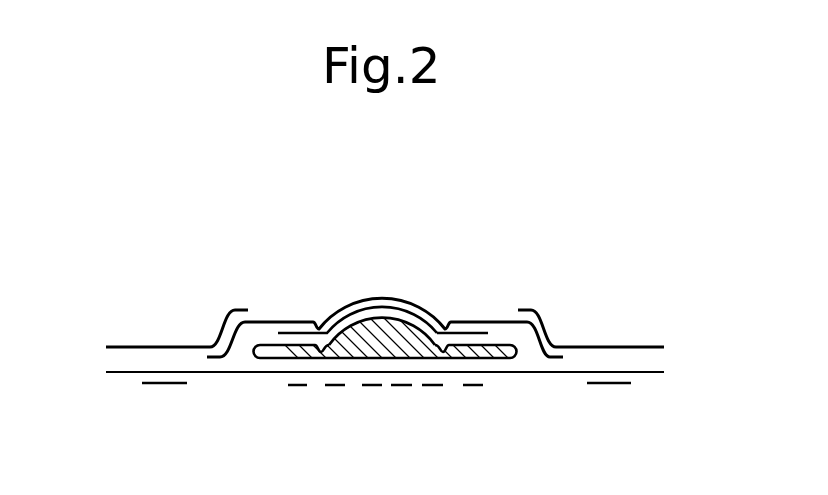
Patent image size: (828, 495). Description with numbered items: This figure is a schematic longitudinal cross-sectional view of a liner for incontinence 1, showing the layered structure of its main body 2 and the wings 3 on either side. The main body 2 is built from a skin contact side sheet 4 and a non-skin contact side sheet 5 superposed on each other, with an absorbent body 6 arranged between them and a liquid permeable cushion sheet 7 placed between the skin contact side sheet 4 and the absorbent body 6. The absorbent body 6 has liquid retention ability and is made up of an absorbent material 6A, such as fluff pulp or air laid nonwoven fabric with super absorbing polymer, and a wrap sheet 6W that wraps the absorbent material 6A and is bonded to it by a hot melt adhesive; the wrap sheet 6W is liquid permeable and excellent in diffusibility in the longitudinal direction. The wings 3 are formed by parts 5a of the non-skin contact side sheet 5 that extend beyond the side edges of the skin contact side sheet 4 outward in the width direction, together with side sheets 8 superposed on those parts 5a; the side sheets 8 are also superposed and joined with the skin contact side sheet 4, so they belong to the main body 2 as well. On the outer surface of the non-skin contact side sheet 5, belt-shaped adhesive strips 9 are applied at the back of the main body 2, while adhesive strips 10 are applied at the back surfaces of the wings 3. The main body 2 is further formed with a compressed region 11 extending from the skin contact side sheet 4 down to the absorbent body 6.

The liner for incontinence 1 is at (614, 226).
The main body 2 is at (508, 302).
The wings 3 is at (128, 328).
The skin contact side sheet 4 is at (265, 321).
The non-skin contact side sheet 5 is at (232, 374).
The parts of the non-skin contact side sheet 5a is at (119, 374).
The absorbent body 6 is at (410, 328).
The absorbent material 6A is at (363, 326).
The wrap sheet 6W is at (380, 359).
The liquid permeable cushion sheet 7 is at (486, 330).
The side sheets 8 is at (174, 355).
The adhesive strips 9 is at (437, 389).
The adhesive strips 10 is at (165, 386).
The compressed region 11 is at (318, 323).